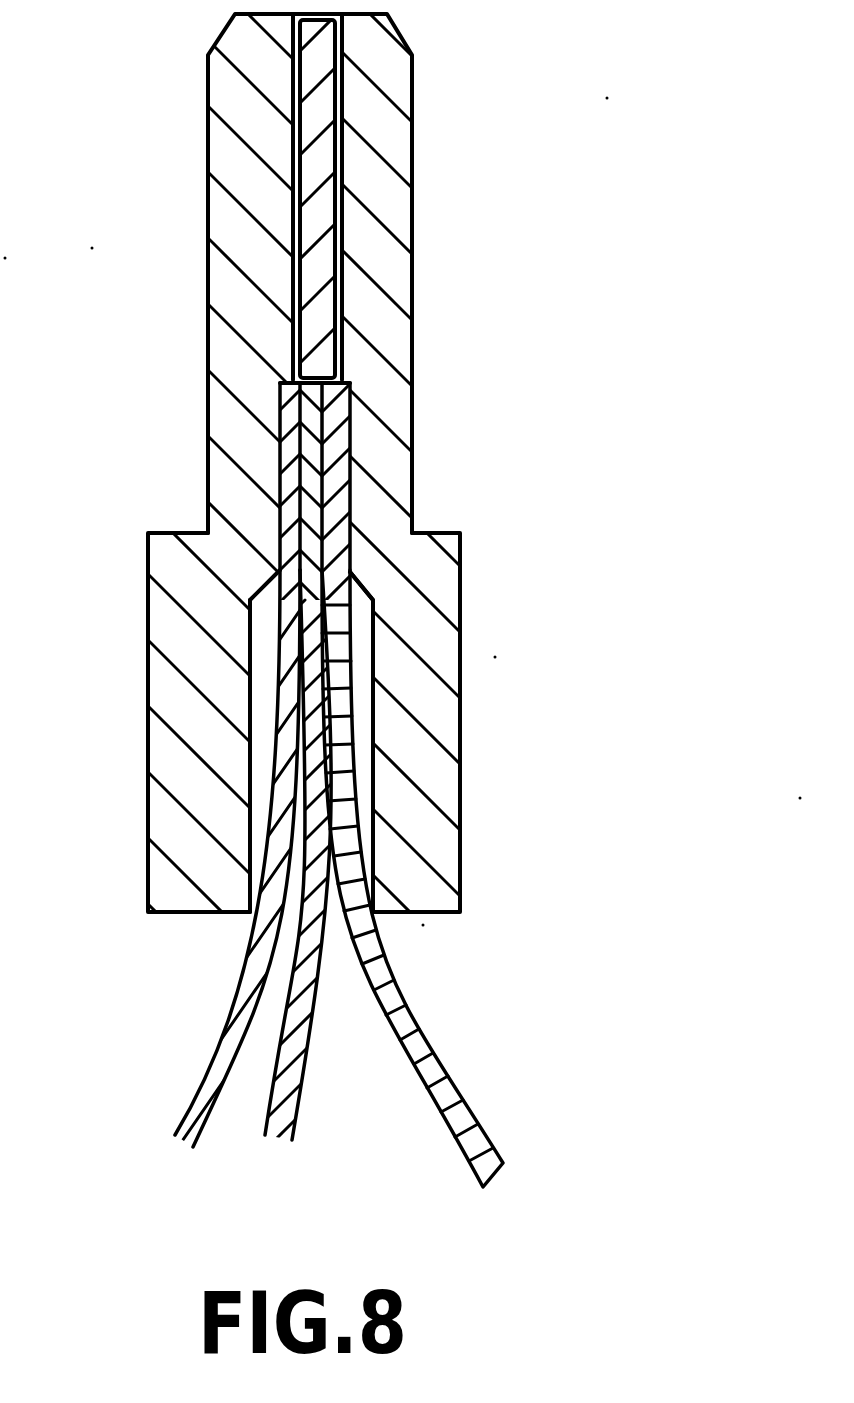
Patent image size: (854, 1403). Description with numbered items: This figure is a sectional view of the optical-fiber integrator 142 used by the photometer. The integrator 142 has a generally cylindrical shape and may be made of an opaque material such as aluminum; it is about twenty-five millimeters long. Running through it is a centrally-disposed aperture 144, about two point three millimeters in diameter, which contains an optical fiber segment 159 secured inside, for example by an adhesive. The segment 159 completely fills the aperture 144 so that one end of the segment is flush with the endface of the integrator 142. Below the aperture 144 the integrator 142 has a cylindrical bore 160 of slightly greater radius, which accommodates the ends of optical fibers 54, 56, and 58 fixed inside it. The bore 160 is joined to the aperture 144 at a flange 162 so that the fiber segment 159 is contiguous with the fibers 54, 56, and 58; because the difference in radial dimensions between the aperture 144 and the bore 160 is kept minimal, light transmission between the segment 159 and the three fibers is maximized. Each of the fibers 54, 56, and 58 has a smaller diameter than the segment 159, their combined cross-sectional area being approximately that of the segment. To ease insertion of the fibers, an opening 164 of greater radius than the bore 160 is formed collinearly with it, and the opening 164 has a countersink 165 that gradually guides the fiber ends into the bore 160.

The optical-fiber integrator 142 is at (167, 608).
The aperture 144 is at (340, 233).
The optical fiber segment 159 is at (322, 128).
The cylindrical bore 160 is at (280, 453).
The flange 162 is at (285, 378).
The opening 164 is at (260, 673).
The countersink 165 is at (348, 590).
The optical fiber 54 is at (405, 1030).
The optical fiber 56 is at (290, 1093).
The optical fiber 58 is at (205, 1105).